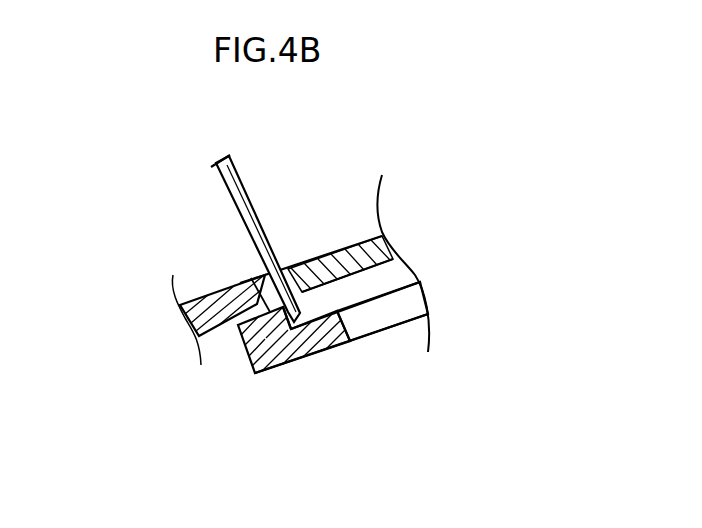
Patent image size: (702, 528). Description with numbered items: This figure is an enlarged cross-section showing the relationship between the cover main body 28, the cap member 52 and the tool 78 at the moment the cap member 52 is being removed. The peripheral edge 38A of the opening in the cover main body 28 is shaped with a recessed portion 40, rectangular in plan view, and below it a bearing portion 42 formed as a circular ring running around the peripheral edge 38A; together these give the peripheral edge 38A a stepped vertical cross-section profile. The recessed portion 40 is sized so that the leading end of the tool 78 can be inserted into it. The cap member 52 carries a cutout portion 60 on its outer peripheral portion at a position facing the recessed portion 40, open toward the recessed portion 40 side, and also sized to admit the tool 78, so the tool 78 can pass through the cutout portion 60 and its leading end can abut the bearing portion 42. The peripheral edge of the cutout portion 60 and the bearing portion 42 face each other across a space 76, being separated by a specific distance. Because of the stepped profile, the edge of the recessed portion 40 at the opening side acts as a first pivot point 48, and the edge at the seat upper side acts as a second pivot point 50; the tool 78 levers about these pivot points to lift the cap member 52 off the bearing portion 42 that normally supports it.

The tool 78 is at (237, 182).
The cap member 52 is at (400, 237).
The space 76 is at (320, 304).
The cutout portion 60 is at (292, 275).
The bearing portion 42 is at (351, 341).
The first pivot point 48 is at (285, 318).
The cover main body 28 is at (248, 359).
The peripheral edge 38A is at (180, 303).
The recessed portion 40 is at (257, 290).
The second pivot point 50 is at (250, 278).